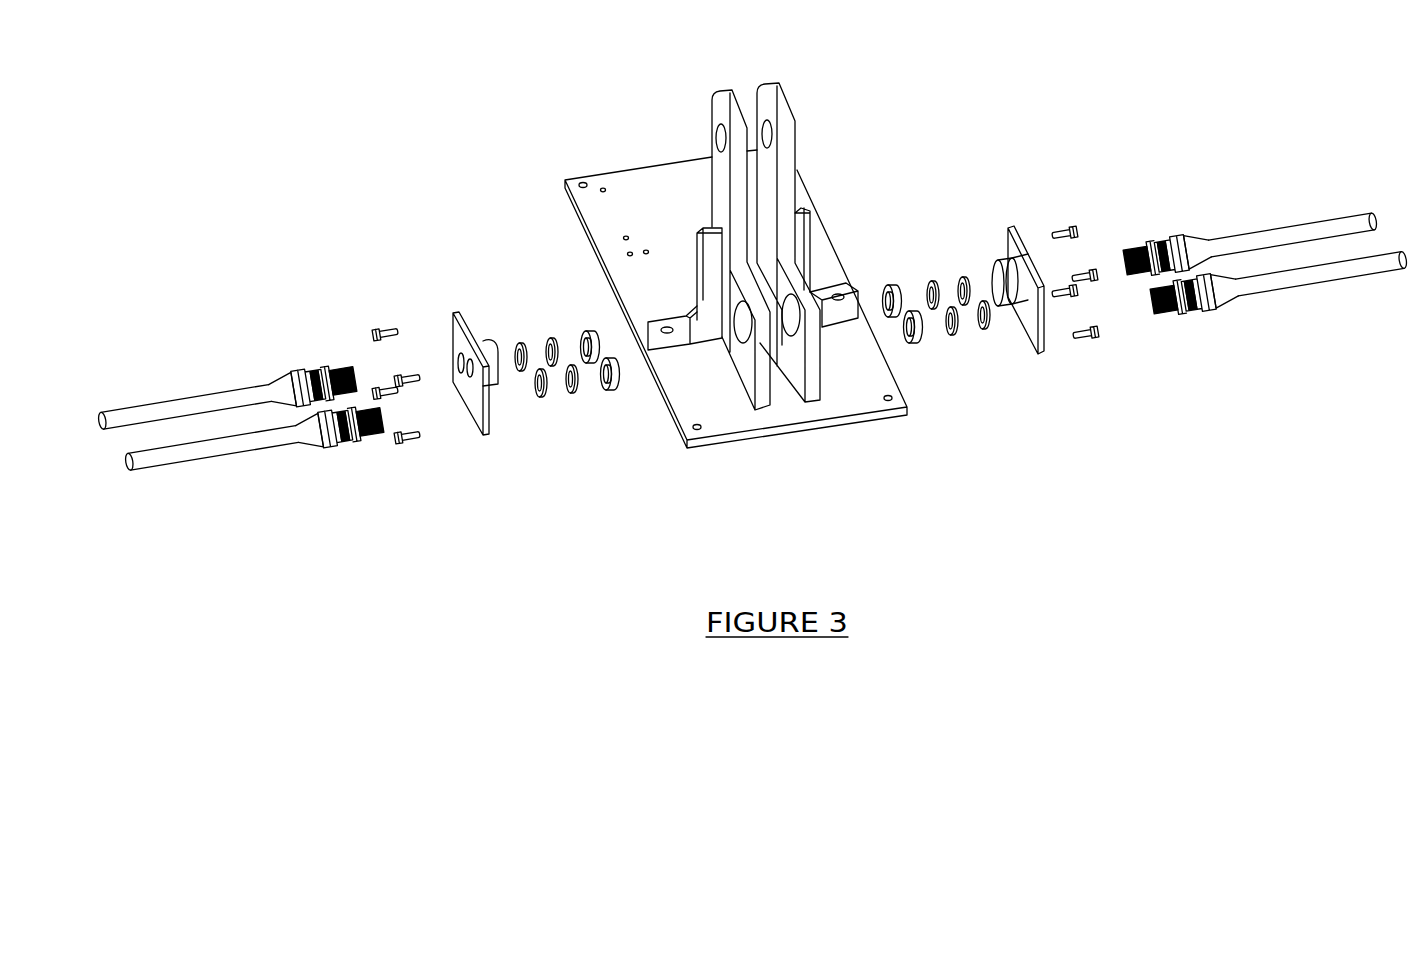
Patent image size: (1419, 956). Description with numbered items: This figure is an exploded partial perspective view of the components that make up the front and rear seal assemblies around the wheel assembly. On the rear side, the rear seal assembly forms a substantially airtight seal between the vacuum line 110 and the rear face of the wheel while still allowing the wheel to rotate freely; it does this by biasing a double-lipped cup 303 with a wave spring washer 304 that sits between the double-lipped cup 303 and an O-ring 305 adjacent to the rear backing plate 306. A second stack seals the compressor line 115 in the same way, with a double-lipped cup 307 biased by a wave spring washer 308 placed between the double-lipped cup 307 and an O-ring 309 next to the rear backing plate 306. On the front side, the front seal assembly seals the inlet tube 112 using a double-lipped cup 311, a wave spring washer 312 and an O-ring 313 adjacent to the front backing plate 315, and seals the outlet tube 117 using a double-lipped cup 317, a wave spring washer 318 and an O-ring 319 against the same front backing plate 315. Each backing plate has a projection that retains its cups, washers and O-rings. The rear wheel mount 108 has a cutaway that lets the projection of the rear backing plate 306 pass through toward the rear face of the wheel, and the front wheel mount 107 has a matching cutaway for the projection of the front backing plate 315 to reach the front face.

The front wheel mount 107 is at (755, 400).
The rear wheel mount 108 is at (822, 368).
The vacuum line 110 is at (1248, 298).
The inlet tube 112 is at (224, 452).
The compressor line 115 is at (1258, 229).
The outlet tube 117 is at (218, 392).
The double-lipped cup 303 is at (920, 346).
The wave spring washer 304 is at (951, 337).
The O-ring 305 is at (987, 331).
The rear backing plate 306 is at (1043, 333).
The double-lipped cup 307 is at (885, 285).
The wave spring washer 308 is at (929, 279).
The O-ring 309 is at (963, 277).
The double-lipped cup 311 is at (606, 395).
The wave spring washer 312 is at (571, 395).
The O-ring 313 is at (538, 398).
The front backing plate 315 is at (467, 420).
The double-lipped cup 317 is at (590, 328).
The wave spring washer 318 is at (552, 337).
The O-ring 319 is at (520, 342).